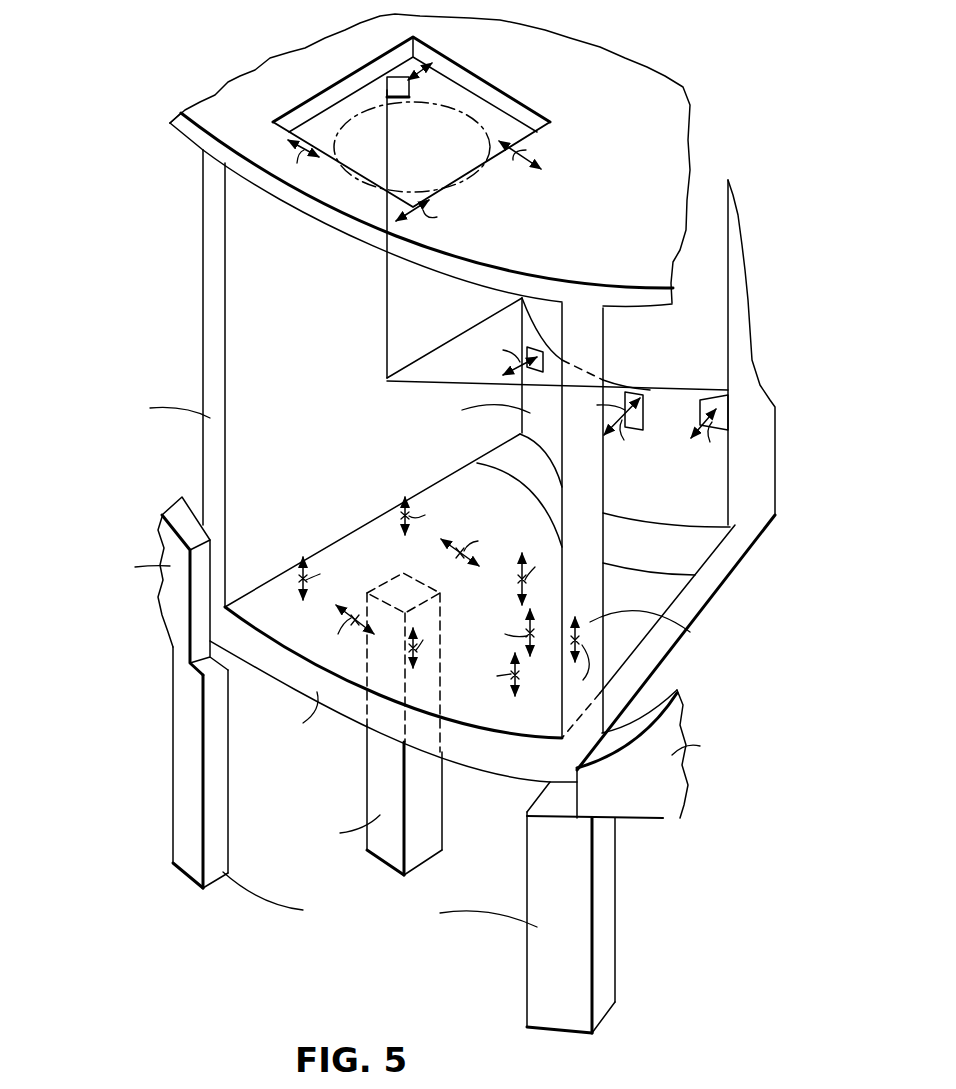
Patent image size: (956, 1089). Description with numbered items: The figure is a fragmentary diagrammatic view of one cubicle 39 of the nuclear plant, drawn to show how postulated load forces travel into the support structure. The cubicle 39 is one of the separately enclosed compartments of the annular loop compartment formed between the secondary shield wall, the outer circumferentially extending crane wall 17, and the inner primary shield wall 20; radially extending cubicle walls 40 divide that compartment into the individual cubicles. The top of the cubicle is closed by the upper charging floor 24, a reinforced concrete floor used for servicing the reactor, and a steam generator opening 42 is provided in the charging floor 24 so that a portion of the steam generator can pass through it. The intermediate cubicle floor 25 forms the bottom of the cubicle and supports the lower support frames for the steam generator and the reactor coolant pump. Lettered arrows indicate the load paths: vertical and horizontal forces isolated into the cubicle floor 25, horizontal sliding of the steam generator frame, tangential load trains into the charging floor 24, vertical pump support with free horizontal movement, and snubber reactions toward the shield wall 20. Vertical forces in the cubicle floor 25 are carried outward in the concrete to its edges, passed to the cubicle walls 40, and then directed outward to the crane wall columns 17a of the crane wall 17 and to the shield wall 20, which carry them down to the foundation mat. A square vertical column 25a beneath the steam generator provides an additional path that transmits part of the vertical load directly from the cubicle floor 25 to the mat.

The outer circumferentially extending wall 17 is at (165, 617).
The crane wall columns 17a is at (190, 698).
The primary shield wall 20 is at (778, 447).
The charging floor 24 is at (630, 162).
The cubicle floor 25 is at (250, 607).
The square vertical column 25a is at (425, 803).
The cubicle 39 is at (298, 370).
The radially extending walls 40 is at (213, 257).
The steam generator opening 42 is at (470, 75).